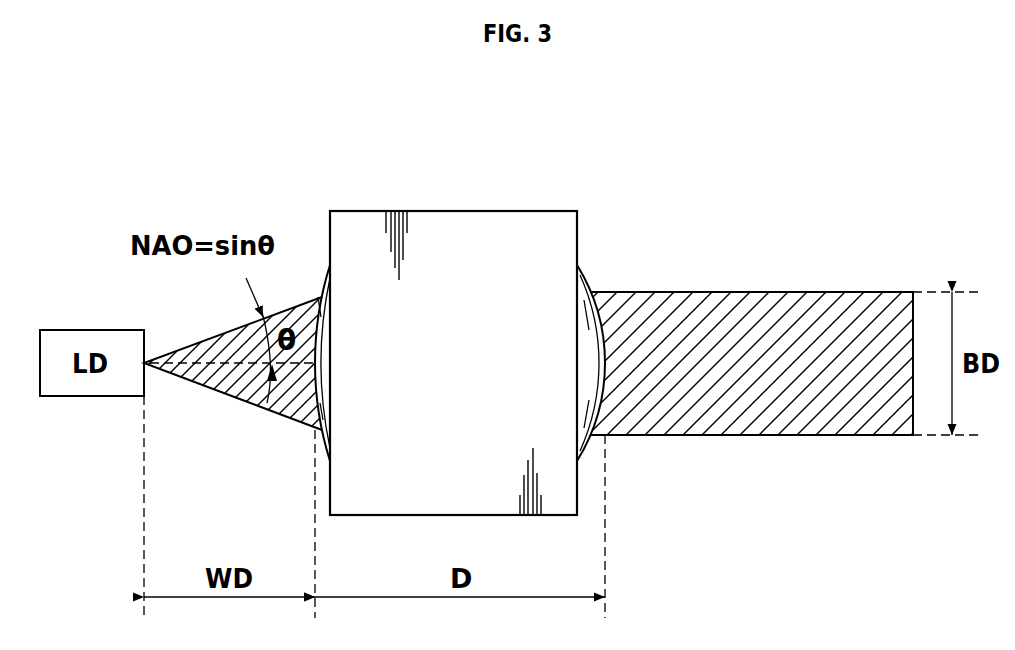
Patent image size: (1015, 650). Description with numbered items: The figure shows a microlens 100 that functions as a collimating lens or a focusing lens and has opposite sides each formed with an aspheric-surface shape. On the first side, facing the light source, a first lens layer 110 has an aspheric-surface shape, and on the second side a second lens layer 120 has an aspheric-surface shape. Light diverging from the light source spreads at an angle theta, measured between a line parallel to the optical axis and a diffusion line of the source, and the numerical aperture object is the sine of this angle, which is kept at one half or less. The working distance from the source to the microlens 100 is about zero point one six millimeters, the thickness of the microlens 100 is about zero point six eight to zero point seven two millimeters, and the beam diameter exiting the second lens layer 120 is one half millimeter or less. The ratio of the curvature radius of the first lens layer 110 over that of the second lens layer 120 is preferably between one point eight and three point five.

The microlens 100 is at (452, 220).
The first lens layer 110 is at (318, 322).
The second lens layer 120 is at (611, 322).